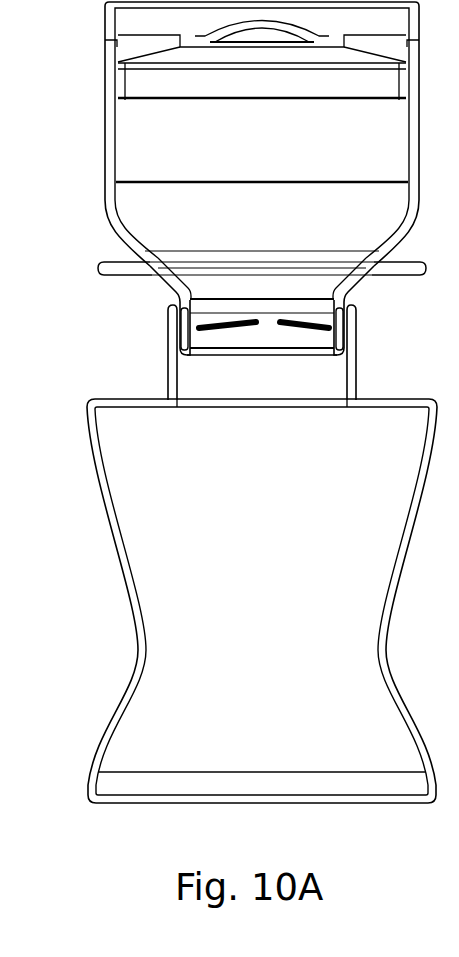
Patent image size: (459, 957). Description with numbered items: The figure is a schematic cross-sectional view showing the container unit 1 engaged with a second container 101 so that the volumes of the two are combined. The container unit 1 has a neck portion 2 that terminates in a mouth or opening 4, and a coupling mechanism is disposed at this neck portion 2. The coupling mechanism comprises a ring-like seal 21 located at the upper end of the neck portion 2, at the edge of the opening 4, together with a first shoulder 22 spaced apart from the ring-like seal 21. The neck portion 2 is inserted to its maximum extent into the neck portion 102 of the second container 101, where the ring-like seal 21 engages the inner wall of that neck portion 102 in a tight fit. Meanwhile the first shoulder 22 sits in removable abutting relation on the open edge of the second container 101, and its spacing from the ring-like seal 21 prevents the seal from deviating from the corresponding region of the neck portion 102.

The container unit 1 is at (108, 107).
The neck portion 2 is at (183, 328).
The opening 4 is at (265, 357).
The ring-like seal 21 is at (341, 350).
The first shoulder 22 is at (350, 302).
The second container 101 is at (107, 500).
The neck portion of the second container 102 is at (167, 369).